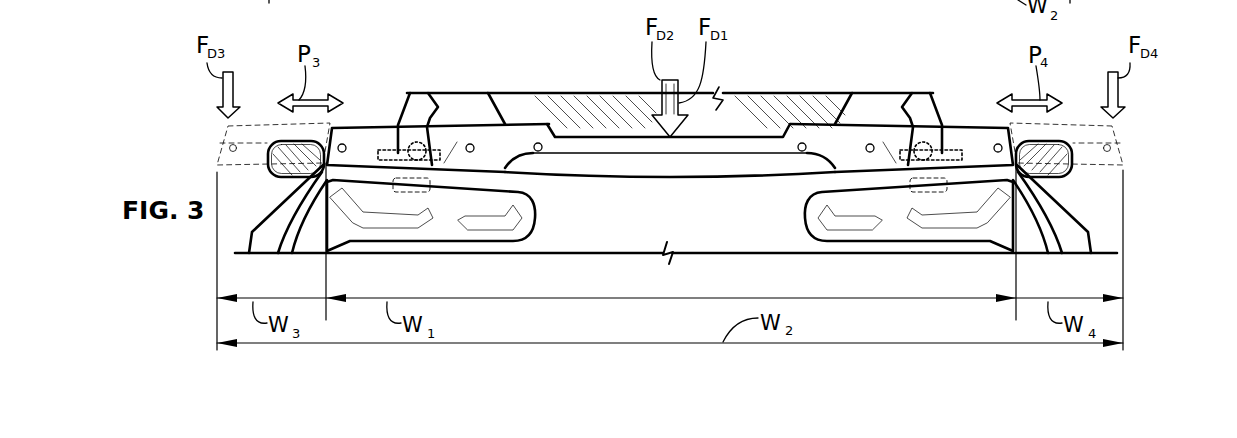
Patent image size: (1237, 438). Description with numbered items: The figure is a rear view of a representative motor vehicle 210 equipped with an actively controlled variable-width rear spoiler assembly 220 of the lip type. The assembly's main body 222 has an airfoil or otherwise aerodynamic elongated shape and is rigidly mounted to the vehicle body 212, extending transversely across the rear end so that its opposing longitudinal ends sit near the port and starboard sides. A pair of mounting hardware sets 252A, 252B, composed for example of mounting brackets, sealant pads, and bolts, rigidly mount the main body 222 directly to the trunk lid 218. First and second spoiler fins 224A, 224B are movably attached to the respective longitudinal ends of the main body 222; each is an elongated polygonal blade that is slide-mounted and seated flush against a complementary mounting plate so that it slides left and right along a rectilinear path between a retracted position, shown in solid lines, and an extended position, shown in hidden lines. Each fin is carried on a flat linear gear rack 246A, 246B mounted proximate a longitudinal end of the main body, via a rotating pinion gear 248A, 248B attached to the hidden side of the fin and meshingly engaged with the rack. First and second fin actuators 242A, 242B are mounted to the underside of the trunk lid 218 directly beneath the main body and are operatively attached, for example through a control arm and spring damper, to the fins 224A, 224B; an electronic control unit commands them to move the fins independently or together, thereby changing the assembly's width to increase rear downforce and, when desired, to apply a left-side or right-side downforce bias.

The motor vehicle 210 is at (1140, 21).
The vehicle body 212 is at (1100, 227).
The trunk lid 218 is at (580, 177).
The variable-width rear spoiler assembly 220 is at (788, 98).
The main body 222 is at (741, 136).
The first spoiler fin 224A is at (362, 127).
The second spoiler fin 224B is at (977, 127).
The first fin actuator 242A is at (427, 193).
The second fin actuator 242B is at (913, 193).
The first linear gear rack 246A is at (409, 92).
The second linear gear rack 246B is at (931, 92).
The first pinion gear 248A is at (432, 150).
The second pinion gear 248B is at (910, 148).
The first mounting hardware set 252A is at (372, 172).
The second mounting hardware set 252B is at (968, 172).